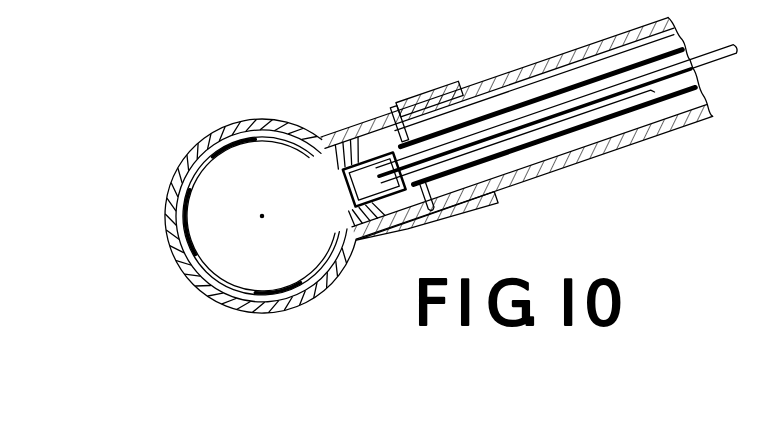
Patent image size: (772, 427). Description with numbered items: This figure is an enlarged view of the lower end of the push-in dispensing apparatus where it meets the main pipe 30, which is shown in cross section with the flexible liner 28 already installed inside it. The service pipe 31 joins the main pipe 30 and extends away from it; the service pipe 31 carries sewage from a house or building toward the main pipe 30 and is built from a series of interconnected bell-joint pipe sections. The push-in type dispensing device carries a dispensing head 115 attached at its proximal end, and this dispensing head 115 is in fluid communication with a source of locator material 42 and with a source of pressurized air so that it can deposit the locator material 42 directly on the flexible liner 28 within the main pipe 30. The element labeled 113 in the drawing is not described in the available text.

The flexible liner 28 is at (259, 143).
The main pipe 30 is at (163, 212).
The service pipe 31 is at (565, 172).
The locator material 42 is at (362, 158).
The lower connector portion 113 is at (365, 222).
The dispensing head 115 is at (383, 155).